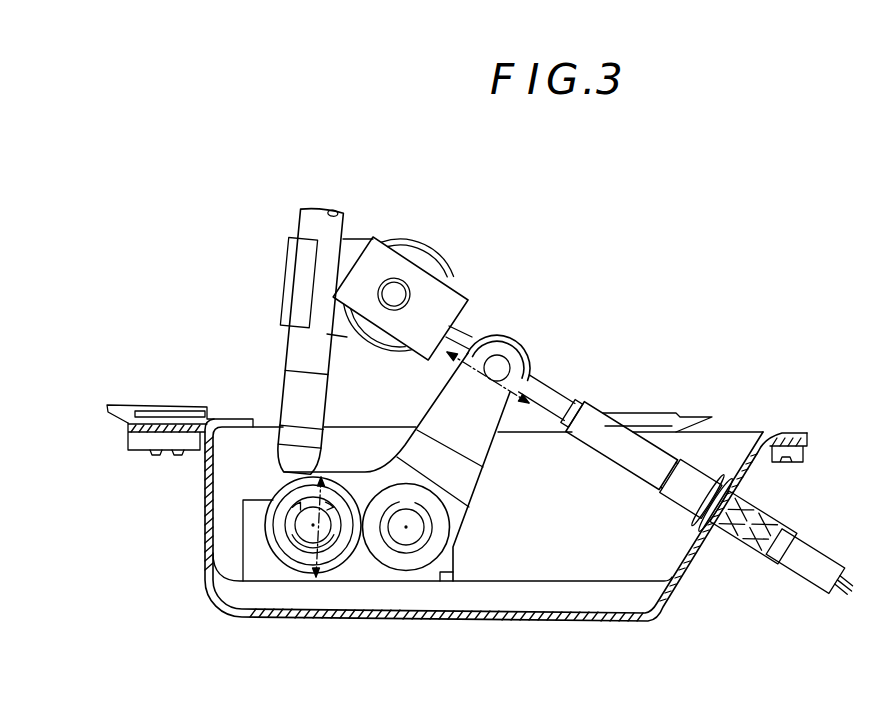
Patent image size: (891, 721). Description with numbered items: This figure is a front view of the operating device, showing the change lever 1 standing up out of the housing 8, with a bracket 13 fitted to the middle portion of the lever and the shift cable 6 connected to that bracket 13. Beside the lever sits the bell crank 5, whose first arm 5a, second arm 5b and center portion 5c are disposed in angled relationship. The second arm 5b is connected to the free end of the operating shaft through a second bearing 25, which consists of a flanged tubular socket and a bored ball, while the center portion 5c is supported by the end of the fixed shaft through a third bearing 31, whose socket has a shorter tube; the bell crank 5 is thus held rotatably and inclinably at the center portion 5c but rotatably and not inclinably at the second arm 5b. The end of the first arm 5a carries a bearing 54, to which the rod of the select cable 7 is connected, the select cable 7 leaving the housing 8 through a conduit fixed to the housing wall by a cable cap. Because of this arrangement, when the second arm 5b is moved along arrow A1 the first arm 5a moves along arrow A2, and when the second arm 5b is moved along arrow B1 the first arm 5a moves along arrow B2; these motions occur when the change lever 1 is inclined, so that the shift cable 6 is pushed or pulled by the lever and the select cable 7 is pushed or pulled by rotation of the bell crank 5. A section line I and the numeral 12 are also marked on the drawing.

The change lever 1 is at (307, 222).
The bell crank 5 is at (472, 513).
The first arm 5a is at (481, 448).
The second arm 5b is at (324, 573).
The center portion 5c is at (420, 573).
The shift cable 6 is at (849, 573).
The select cable 7 is at (838, 596).
The housing 8 is at (226, 420).
The recording medium 12 is at (878, 139).
The bracket 13 is at (443, 270).
The second bearing 25 is at (293, 522).
The third bearing 31 is at (433, 537).
The bearing 54 is at (520, 345).
The arrow A1 is at (288, 559).
The arrow A2 is at (478, 332).
The arrow B1 is at (282, 478).
The arrow B2 is at (533, 382).
The section line I- I is at (240, 524).